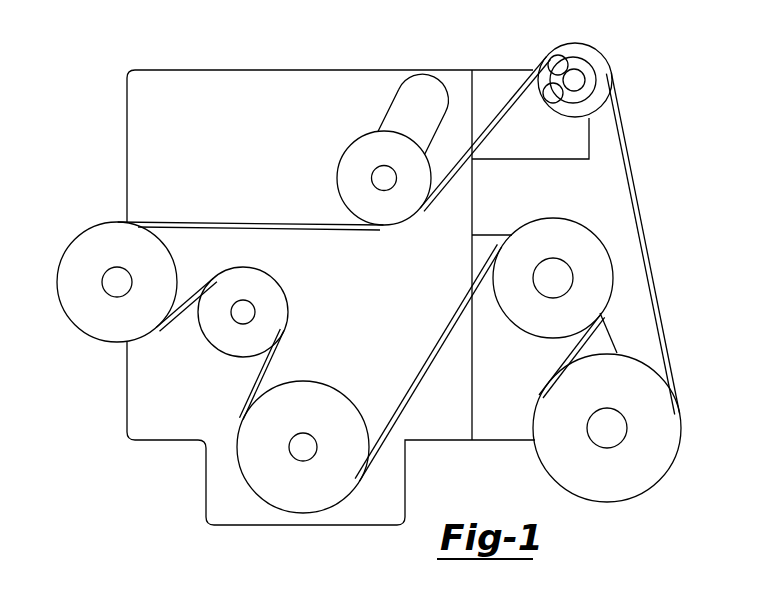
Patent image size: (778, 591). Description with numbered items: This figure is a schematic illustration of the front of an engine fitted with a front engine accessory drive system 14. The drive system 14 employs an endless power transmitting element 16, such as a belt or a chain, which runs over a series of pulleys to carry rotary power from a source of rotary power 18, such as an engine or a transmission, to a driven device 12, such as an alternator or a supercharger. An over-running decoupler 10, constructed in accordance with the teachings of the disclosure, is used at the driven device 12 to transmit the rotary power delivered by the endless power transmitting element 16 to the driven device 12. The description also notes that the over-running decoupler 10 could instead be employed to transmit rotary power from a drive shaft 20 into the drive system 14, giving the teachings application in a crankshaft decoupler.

The over-running decoupler 10 is at (590, 93).
The driven device 12 is at (583, 53).
The drive system 14 is at (118, 387).
The endless power transmitting element 16 is at (230, 222).
The source of rotary power 18 is at (222, 472).
The drive shaft 20 is at (303, 447).